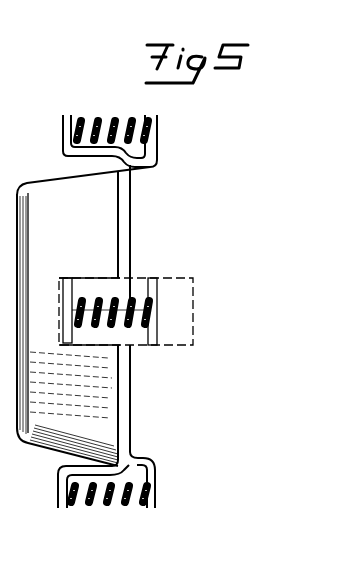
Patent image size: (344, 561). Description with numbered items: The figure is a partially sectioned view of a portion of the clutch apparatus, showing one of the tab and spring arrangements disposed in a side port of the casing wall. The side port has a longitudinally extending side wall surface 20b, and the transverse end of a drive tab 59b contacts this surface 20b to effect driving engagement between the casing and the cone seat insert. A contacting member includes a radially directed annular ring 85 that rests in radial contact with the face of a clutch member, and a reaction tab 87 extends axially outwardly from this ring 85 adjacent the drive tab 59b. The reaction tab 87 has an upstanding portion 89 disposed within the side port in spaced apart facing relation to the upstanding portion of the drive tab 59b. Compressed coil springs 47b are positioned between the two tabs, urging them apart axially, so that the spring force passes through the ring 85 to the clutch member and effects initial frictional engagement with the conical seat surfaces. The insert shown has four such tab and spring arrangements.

The longitudinally extending side wall surface 20b is at (151, 276).
The compressed coil spring 47b is at (100, 118).
The drive tab 59b is at (158, 121).
The radially directed annular ring 85 is at (133, 203).
The reaction tab 87 is at (90, 168).
The upstanding portion 89 is at (73, 120).